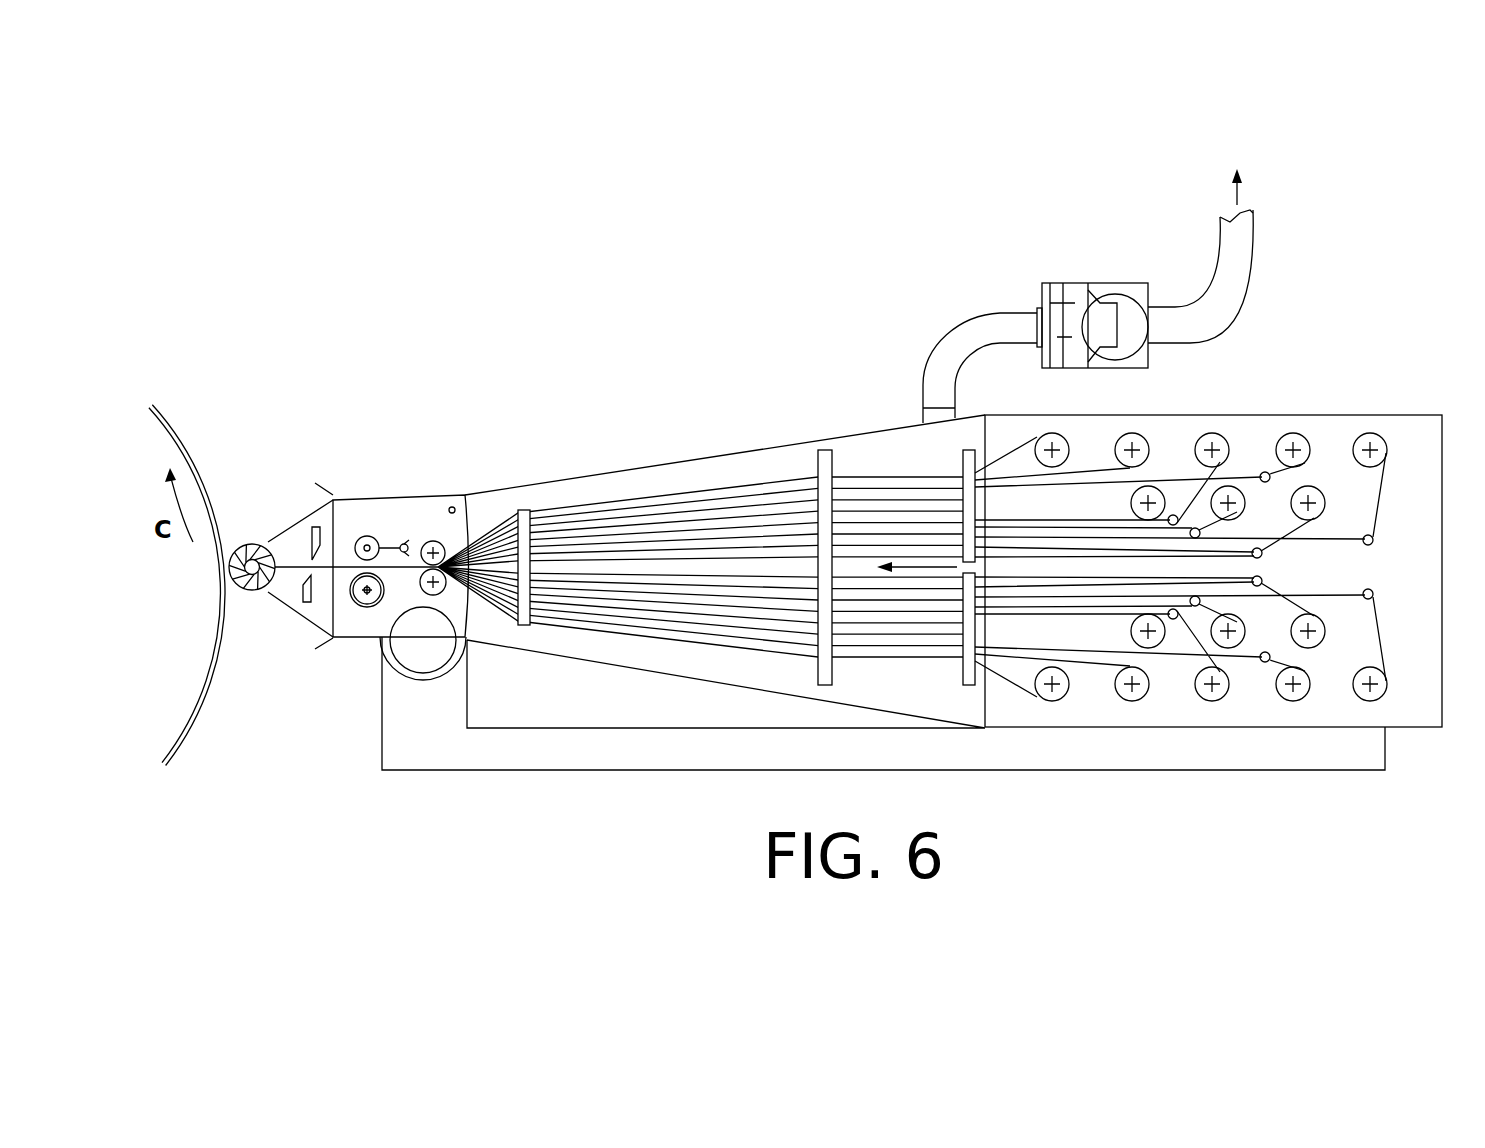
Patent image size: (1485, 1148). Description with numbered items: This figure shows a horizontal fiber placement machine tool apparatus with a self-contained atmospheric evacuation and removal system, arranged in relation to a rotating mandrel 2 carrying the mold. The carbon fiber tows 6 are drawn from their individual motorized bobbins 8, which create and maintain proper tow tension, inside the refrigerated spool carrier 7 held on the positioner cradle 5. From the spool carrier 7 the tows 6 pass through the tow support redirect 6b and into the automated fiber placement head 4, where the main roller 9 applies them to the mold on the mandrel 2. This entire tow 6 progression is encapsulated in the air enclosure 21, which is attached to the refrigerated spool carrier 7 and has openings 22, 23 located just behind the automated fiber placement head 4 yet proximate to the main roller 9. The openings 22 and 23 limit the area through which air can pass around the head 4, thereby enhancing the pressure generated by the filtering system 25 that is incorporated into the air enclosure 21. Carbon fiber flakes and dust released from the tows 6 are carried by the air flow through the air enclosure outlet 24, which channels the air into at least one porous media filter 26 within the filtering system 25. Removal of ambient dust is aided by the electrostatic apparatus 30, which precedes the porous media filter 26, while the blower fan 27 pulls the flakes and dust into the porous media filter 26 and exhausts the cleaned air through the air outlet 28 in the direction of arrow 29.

The mandrel 2 is at (190, 447).
The automated fiber placement head 4 is at (452, 507).
The positioner cradle 5 is at (1122, 752).
The carbon fiber tow 6 is at (673, 523).
The tow support redirect 6b is at (817, 468).
The refrigerated spool carrier 7 is at (1352, 415).
The motorized bobbin 8 is at (1310, 432).
The main roller 9 is at (250, 591).
The air enclosure 21 is at (620, 470).
The opening 22 is at (281, 505).
The opening 23 is at (288, 636).
The air enclosure outlet 24 is at (938, 440).
The filtering system 25 is at (1127, 283).
The porous media filter 26 is at (1073, 303).
The blower fan 27 is at (1143, 297).
The air outlet 28 is at (1245, 233).
The arrow 29 is at (1242, 169).
The electrostatic apparatus 30 is at (1040, 297).